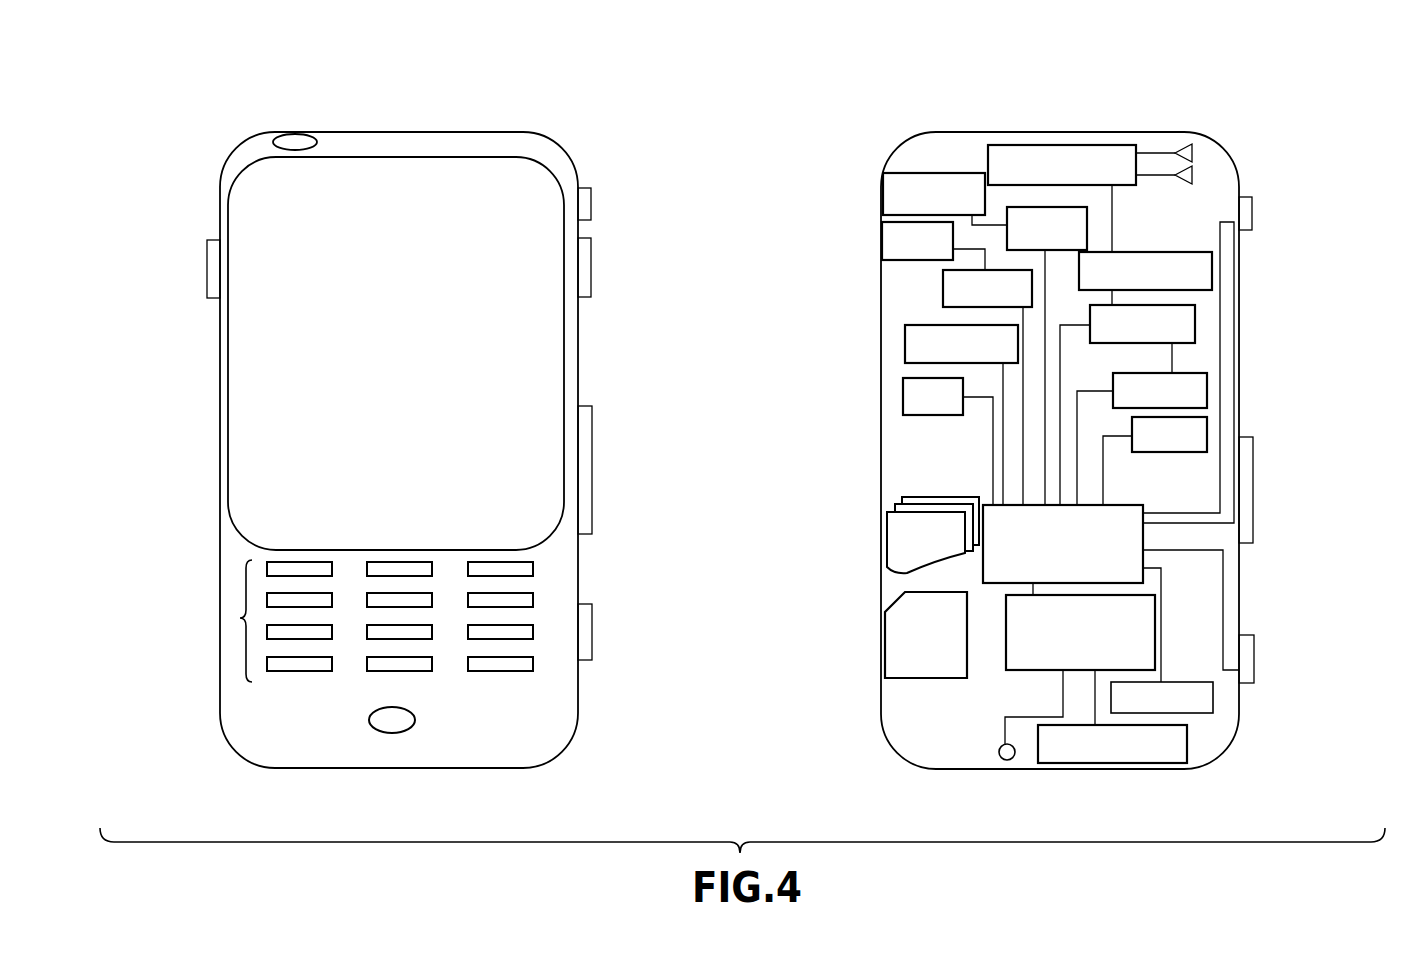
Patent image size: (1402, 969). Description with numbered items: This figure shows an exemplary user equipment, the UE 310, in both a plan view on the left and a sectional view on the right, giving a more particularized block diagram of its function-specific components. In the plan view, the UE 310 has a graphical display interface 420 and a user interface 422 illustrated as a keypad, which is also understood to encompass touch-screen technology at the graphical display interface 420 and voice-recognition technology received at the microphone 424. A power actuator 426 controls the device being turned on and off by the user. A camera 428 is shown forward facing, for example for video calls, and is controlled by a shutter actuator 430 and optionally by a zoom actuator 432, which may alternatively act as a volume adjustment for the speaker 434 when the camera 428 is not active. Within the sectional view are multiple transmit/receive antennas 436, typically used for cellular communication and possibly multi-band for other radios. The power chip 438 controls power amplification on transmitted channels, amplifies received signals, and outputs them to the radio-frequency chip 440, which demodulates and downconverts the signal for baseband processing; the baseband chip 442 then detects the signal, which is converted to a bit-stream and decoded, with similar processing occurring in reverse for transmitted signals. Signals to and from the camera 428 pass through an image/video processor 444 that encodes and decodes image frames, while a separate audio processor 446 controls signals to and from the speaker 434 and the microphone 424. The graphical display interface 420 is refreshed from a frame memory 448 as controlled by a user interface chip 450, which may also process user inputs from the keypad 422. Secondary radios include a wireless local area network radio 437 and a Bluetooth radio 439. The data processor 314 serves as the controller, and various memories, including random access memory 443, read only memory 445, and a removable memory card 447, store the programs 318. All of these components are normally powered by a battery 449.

The user equipment 310 is at (212, 93).
The data processor 314 is at (993, 512).
The program of computer instructions 318 is at (895, 548).
The graphical display interface 420 is at (253, 370).
The user interface 422 is at (240, 618).
The microphone 424 is at (396, 722).
The power actuator 426 is at (586, 200).
The camera 428 is at (297, 136).
The shutter actuator 430 is at (586, 627).
The zoom actuator 432 is at (586, 450).
The speaker 434 is at (212, 242).
The transmit/receive antennas 436 is at (1190, 150).
The wireless local area network radio 437 is at (908, 355).
The power chip 438 is at (1055, 150).
The Bluetooth radio 439 is at (908, 398).
The radio-frequency chip 440 is at (1200, 283).
The baseband chip 442 is at (1190, 335).
The random access memory 443 is at (1203, 393).
The image/video processor 444 is at (1087, 240).
The read only memory 445 is at (1203, 433).
The audio processor 446 is at (945, 293).
The memory card 447 is at (890, 616).
The frame memory 448 is at (1110, 763).
The battery 449 is at (1210, 710).
The user interface chip 450 is at (1033, 660).